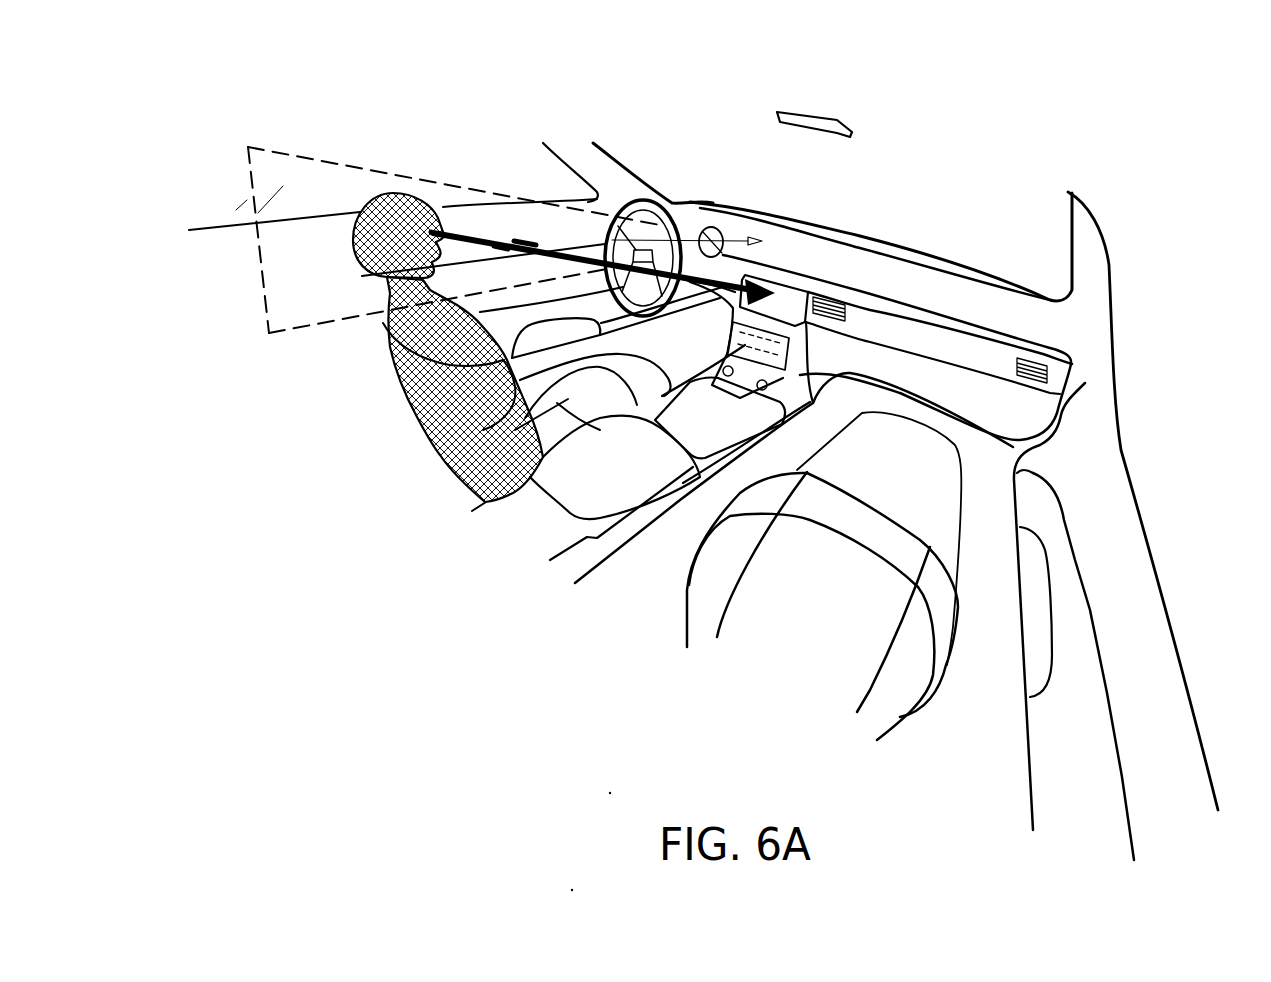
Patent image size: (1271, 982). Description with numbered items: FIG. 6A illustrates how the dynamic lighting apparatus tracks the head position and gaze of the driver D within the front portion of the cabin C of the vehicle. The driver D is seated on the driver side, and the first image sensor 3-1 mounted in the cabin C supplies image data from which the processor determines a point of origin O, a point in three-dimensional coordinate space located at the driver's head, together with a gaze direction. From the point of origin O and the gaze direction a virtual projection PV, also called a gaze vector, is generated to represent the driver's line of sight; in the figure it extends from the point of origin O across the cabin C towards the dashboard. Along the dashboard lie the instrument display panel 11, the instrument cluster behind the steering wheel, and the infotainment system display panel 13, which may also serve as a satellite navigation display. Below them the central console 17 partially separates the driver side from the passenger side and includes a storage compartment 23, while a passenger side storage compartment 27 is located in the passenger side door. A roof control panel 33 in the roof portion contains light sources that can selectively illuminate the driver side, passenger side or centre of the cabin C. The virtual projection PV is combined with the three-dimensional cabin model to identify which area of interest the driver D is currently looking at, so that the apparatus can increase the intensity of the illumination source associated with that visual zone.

The point of origin O is at (430, 230).
The virtual projection PV is at (605, 263).
The instrument display panel 11 is at (688, 240).
The first image sensor 3-1 is at (750, 236).
The infotainment system display panel 13 is at (790, 300).
The central console 17 is at (765, 385).
The storage compartment 23 is at (743, 410).
The passenger side storage compartment 27 is at (1035, 593).
The roof control panel 33 is at (808, 120).
The cabin C is at (1160, 345).
The driver D is at (392, 421).